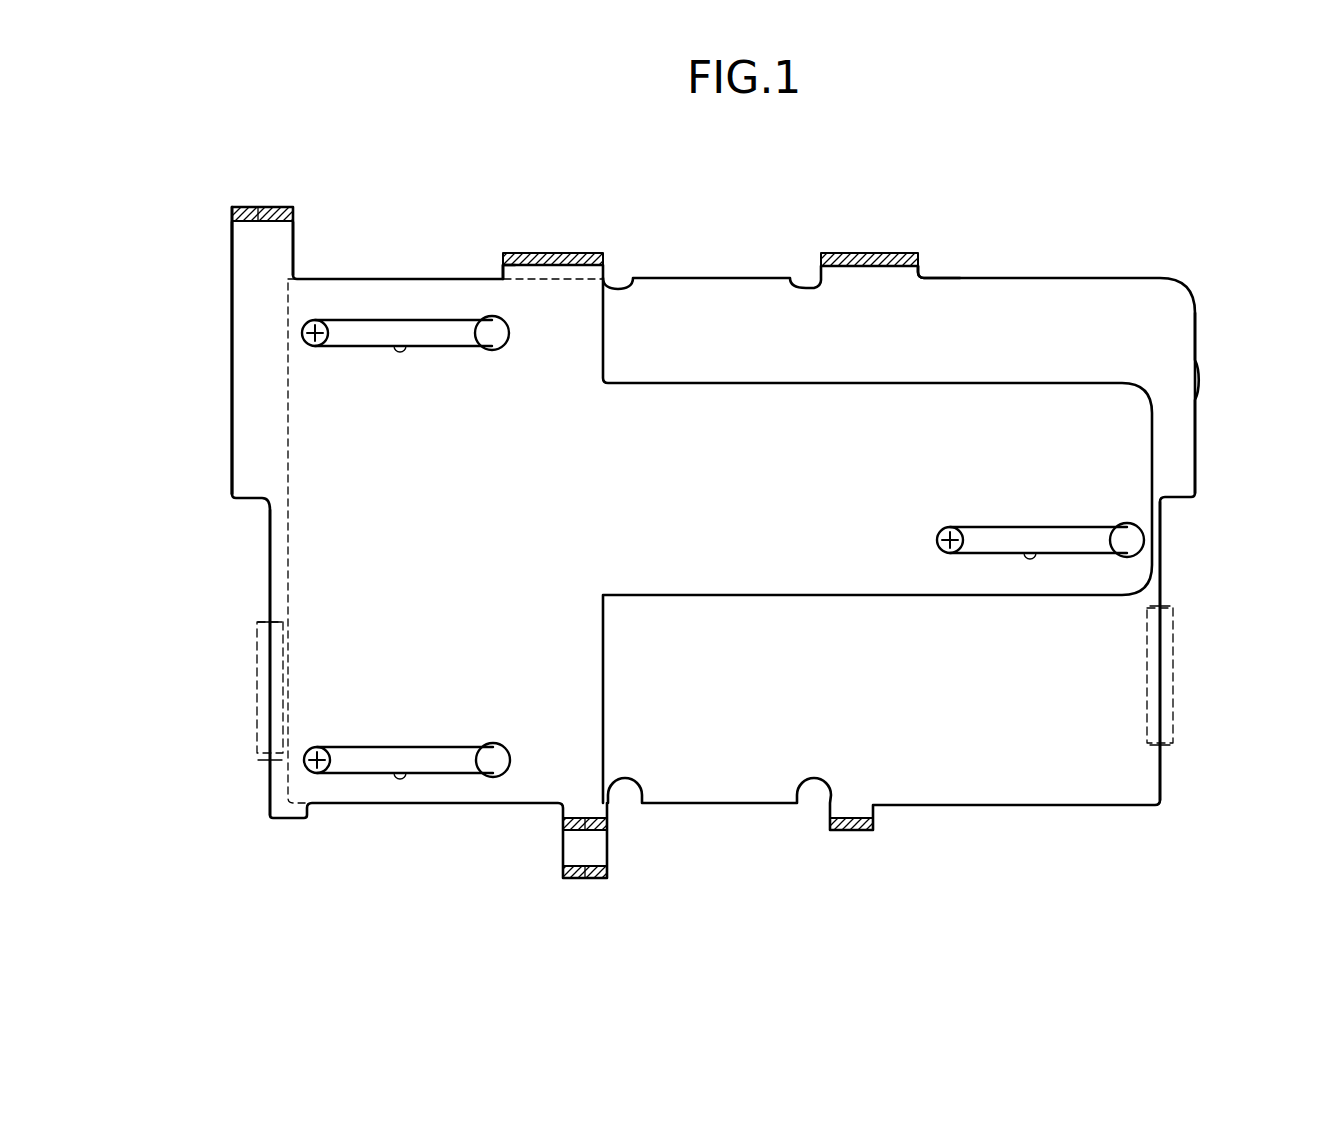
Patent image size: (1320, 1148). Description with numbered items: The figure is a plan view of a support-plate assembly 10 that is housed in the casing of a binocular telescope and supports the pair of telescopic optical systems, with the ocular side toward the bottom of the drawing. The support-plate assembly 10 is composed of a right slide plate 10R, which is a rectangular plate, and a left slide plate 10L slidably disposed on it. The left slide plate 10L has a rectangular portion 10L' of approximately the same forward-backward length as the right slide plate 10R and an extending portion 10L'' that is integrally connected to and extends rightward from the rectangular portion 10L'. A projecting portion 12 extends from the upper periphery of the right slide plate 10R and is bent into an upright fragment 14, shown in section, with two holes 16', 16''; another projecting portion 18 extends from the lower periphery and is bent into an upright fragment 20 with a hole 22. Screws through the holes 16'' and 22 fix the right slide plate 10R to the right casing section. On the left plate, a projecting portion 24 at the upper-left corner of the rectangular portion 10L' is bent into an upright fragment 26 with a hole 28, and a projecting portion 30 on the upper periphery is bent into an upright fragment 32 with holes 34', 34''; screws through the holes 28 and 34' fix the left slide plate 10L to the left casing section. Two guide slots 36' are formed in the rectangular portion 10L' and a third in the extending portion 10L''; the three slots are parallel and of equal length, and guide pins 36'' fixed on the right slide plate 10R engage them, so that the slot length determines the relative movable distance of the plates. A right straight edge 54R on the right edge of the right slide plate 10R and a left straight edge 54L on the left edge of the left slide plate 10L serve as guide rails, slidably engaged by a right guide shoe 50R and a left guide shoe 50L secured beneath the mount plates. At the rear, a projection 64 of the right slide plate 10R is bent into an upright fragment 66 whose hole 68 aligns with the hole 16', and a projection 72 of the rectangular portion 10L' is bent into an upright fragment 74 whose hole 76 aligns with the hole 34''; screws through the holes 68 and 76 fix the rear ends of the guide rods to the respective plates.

The support-plate assembly 10 is at (688, 270).
The left slide plate 10L is at (185, 350).
The right slide plate 10R is at (1199, 352).
The rectangular portion 10L' is at (427, 486).
The extending portion 10L'' is at (843, 486).
The projecting portion 12 is at (918, 272).
The upright fragment 14 is at (873, 253).
The hole 16' is at (844, 302).
The hole 16'' is at (891, 320).
The projecting portion 18 is at (607, 846).
The upright fragment 20 is at (567, 878).
The hole 22 is at (585, 878).
The projecting portion 24 is at (232, 272).
The upright fragment 26 is at (240, 207).
The hole 28 is at (258, 207).
The projecting portion 30 is at (503, 270).
The upright fragment 32 is at (556, 253).
The hole 34' is at (528, 302).
The hole 34'' is at (576, 320).
The guide slot 36' is at (729, 547).
The guide pin 36'' is at (637, 546).
The left guide shoe 50L is at (257, 708).
The right guide shoe 50R is at (1173, 722).
The left straight edge 54L is at (268, 558).
The right straight edge 54R is at (1162, 577).
The projection 64 is at (873, 810).
The upright fragment 66 is at (838, 830).
The hole 68 is at (858, 830).
The projection 72 is at (562, 812).
The upright fragment 74 is at (607, 822).
The hole 76 is at (580, 835).